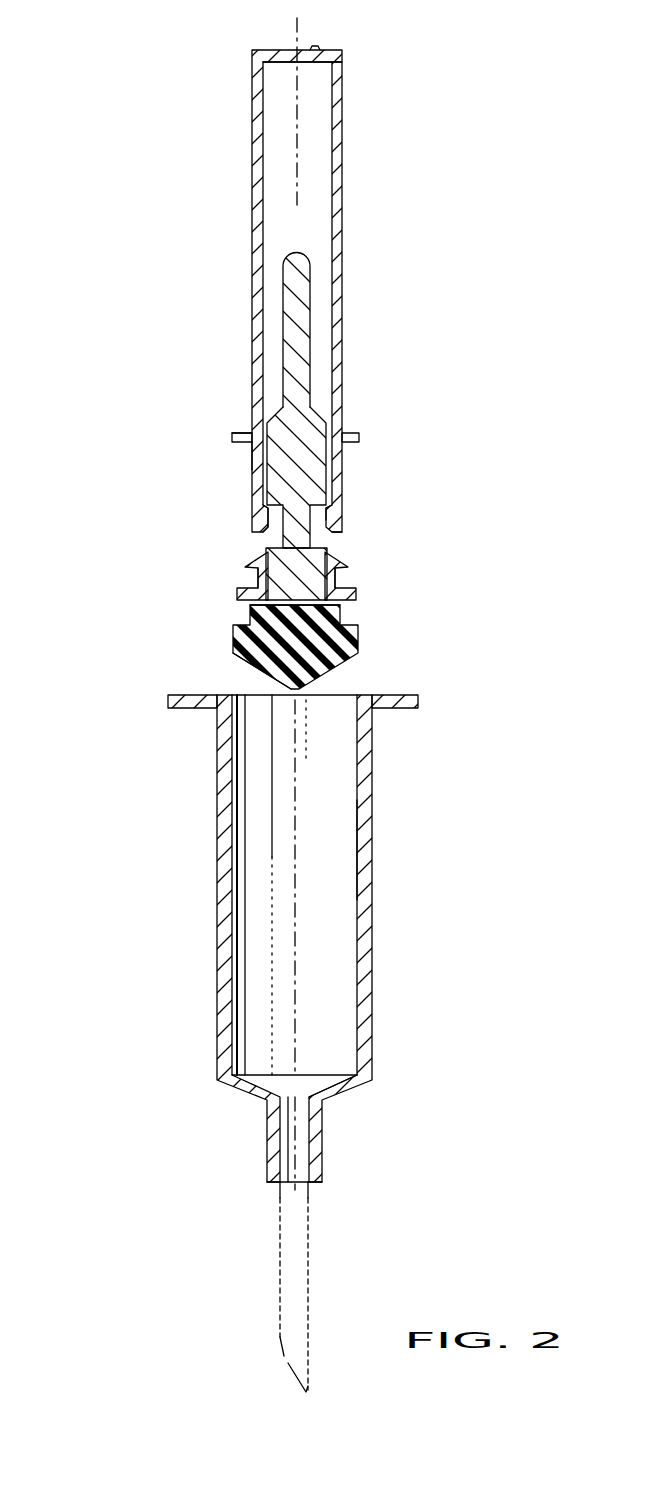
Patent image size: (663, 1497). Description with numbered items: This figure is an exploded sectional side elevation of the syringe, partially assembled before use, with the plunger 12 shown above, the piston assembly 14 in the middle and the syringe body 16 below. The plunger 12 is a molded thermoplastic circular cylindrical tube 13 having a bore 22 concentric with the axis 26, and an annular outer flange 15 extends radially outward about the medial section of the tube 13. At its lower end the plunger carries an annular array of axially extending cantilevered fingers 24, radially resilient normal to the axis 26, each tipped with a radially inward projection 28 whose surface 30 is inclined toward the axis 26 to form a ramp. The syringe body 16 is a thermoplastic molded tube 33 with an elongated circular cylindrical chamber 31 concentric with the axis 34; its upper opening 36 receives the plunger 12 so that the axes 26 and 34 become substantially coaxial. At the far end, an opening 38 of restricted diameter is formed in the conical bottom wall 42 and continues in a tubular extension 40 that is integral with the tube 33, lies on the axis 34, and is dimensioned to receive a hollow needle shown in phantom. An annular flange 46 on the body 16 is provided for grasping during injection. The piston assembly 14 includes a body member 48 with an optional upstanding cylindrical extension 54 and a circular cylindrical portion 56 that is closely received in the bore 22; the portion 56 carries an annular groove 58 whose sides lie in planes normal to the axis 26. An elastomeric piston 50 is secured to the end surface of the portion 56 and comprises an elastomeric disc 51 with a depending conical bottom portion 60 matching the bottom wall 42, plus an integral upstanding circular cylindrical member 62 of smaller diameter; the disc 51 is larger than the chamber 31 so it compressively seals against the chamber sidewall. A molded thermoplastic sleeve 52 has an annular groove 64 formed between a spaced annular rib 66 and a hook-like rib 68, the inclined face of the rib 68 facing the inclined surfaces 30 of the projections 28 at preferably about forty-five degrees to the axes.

The plunger 12 is at (316, 282).
The circular cylindrical tube 13 is at (342, 118).
The piston assembly 14 is at (276, 551).
The outer flange 15 is at (232, 436).
The syringe body 16 is at (355, 1019).
The bore 22 is at (320, 93).
The cantilevered fingers 24 is at (345, 465).
The axis 26 is at (295, 32).
The projection 28 is at (312, 50).
The inclined surface 30 is at (343, 534).
The chamber 31 is at (363, 840).
The tube 33 is at (372, 1005).
The axis 34 is at (297, 793).
The opening 36 is at (340, 705).
The opening 38 is at (291, 1158).
The tubular extension 40 is at (270, 1150).
The conical bottom wall 42 is at (352, 1092).
The annular flange 46 is at (420, 700).
The body member 48 is at (310, 418).
The elastomeric piston 50 is at (245, 644).
The elastomeric disc 51 is at (347, 635).
The sleeve 52 is at (377, 577).
The cylindrical extension 54 is at (296, 292).
The circular cylindrical portion 56 is at (252, 458).
The annular groove 58 is at (343, 503).
The conical bottom portion 60 is at (250, 674).
The circular cylindrical member 62 is at (248, 613).
The annular groove 64 is at (243, 587).
The annular rib 66 is at (247, 578).
The hook-like rib 68 is at (345, 565).